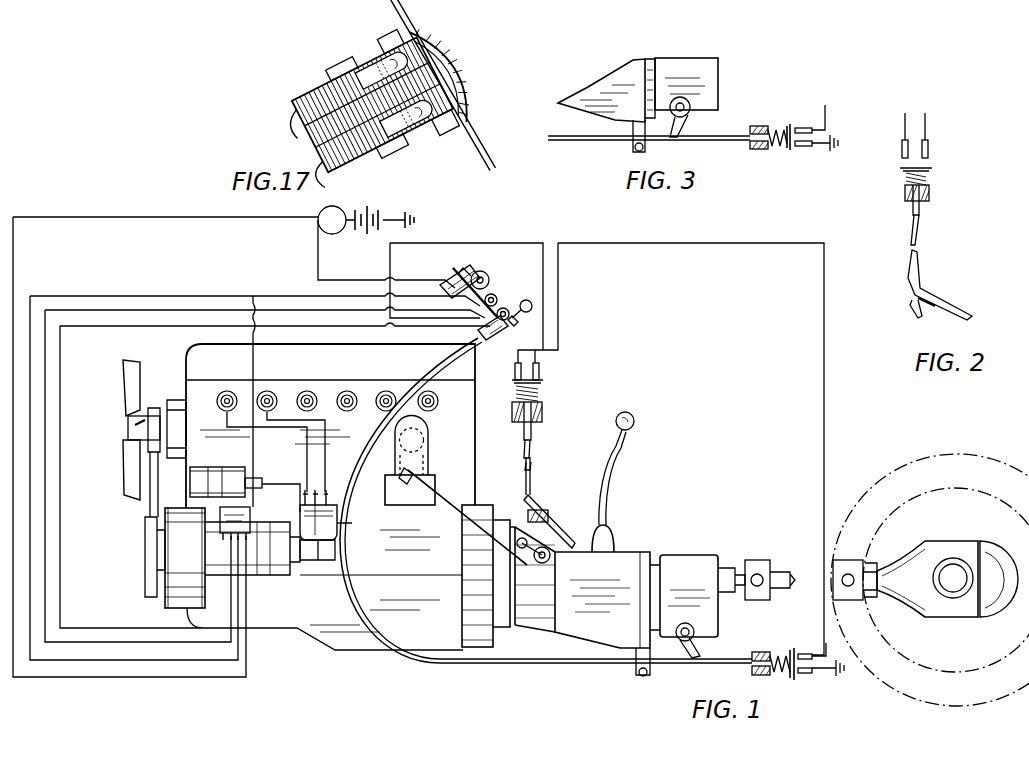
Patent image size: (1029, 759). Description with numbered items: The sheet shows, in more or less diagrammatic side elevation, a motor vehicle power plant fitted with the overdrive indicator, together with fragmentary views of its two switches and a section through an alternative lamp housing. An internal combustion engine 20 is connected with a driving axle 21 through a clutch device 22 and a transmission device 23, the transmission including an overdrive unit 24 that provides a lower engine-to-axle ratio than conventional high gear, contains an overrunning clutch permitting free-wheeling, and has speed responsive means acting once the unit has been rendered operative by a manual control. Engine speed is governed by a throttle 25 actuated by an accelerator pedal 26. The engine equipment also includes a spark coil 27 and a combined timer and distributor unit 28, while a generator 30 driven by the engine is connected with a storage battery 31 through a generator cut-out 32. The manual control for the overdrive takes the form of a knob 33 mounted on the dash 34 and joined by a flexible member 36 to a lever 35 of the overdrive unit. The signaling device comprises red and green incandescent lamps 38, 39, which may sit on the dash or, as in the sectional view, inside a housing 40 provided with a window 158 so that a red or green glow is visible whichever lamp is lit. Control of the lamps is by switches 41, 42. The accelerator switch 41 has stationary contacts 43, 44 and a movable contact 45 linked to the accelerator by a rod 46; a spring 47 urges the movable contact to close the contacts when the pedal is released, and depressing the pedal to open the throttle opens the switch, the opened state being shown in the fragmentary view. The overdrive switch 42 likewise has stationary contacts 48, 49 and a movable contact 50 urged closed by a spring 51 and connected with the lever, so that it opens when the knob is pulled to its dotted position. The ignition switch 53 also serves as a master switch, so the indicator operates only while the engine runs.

In FIG. 1, the internal combustion engine 20 is at (190, 347).
In FIG. 1, the driving axle 21 is at (962, 538).
In FIG. 1, the clutch device 22 is at (502, 522).
In FIG. 3, the transmission device 23 is at (587, 108).
In FIG. 1, the transmission device 23 is at (614, 549).
In FIG. 3, the overdrive unit 24 is at (712, 100).
In FIG. 1, the overdrive unit 24 is at (698, 561).
In FIG. 1, the throttle 25 is at (436, 466).
In FIG. 2, the accelerator pedal 26 is at (954, 291).
In FIG. 1, the accelerator pedal 26 is at (568, 496).
In FIG. 1, the spark coil 27 is at (206, 470).
In FIG. 1, the combined timer and distributor unit 28 is at (340, 526).
In FIG. 1, the generator 30 is at (248, 580).
In FIG. 1, the storage battery 31 is at (346, 232).
In FIG. 1, the generator cut-out 32 is at (250, 508).
In FIG. 1, the knob 33 is at (502, 335).
In FIG. 1, the dash 34 is at (495, 267).
In FIG. 3, the lever 35 is at (684, 126).
In FIG. 1, the lever 35 is at (700, 659).
In FIG. 3, the flexible member 36 is at (685, 142).
In FIG. 1, the flexible member 36 is at (680, 671).
In FIG. 1, the red incandescent lamp 38 is at (509, 313).
In FIG. 1, the green incandescent lamp 39 is at (496, 299).
In FIG. 17, the housing 40 is at (432, 136).
In FIG. 2, the accelerator switch 41 is at (898, 208).
In FIG. 1, the accelerator switch 41 is at (504, 413).
In FIG. 3, the overdrive switch 42 is at (788, 122).
In FIG. 1, the overdrive switch 42 is at (795, 651).
In FIG. 2, the stationary contact 43 is at (896, 146).
In FIG. 1, the stationary contact 43 is at (512, 373).
In FIG. 2, the stationary contact 44 is at (930, 147).
In FIG. 1, the stationary contact 44 is at (540, 373).
In FIG. 2, the movable contact 45 is at (930, 170).
In FIG. 1, the movable contact 45 is at (540, 389).
In FIG. 2, the rod 46 is at (920, 223).
In FIG. 1, the rod 46 is at (535, 443).
In FIG. 2, the spring 47 is at (930, 191).
In FIG. 1, the spring 47 is at (541, 409).
In FIG. 3, the stationary contact 48 is at (812, 148).
In FIG. 1, the stationary contact 48 is at (806, 675).
In FIG. 3, the stationary contact 49 is at (820, 131).
In FIG. 1, the stationary contact 49 is at (826, 673).
In FIG. 3, the movable contact 50 is at (774, 148).
In FIG. 1, the movable contact 50 is at (782, 676).
In FIG. 3, the spring 51 is at (772, 124).
In FIG. 1, the spring 51 is at (778, 650).
In FIG. 1, the ignition switch 53 is at (458, 281).
In FIG. 17, the window 158 is at (462, 70).